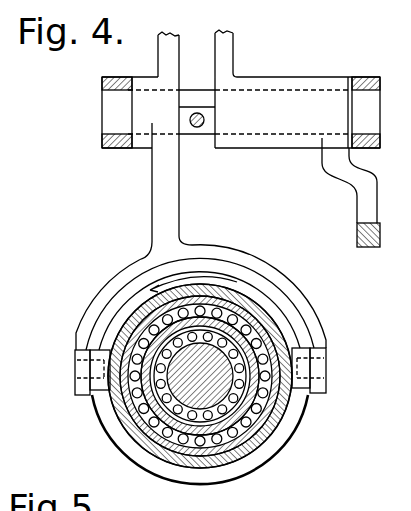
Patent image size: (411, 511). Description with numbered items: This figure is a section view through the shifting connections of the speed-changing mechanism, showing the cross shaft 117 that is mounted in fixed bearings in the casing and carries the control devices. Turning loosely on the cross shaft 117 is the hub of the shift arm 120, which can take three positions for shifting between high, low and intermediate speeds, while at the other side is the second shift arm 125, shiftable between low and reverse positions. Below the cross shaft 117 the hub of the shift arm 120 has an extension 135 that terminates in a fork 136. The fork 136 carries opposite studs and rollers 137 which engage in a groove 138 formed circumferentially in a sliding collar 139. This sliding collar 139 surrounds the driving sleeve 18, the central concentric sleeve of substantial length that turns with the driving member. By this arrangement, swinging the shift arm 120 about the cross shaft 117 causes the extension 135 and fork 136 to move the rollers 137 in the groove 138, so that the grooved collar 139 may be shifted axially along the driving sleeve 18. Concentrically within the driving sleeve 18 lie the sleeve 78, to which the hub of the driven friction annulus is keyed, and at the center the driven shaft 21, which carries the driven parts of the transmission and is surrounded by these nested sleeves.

The cross shaft 117 is at (101, 113).
The shift arm 120 is at (167, 50).
The second shift arm 125 is at (223, 46).
The extension 135 is at (156, 193).
The fork 136 is at (250, 258).
The studs and rollers 137 is at (97, 397).
The groove 138 is at (118, 432).
The sliding collar 139 is at (158, 452).
The driving sleeve 18 is at (238, 459).
The sleeve 78 is at (255, 428).
The driven shaft 21 is at (210, 380).